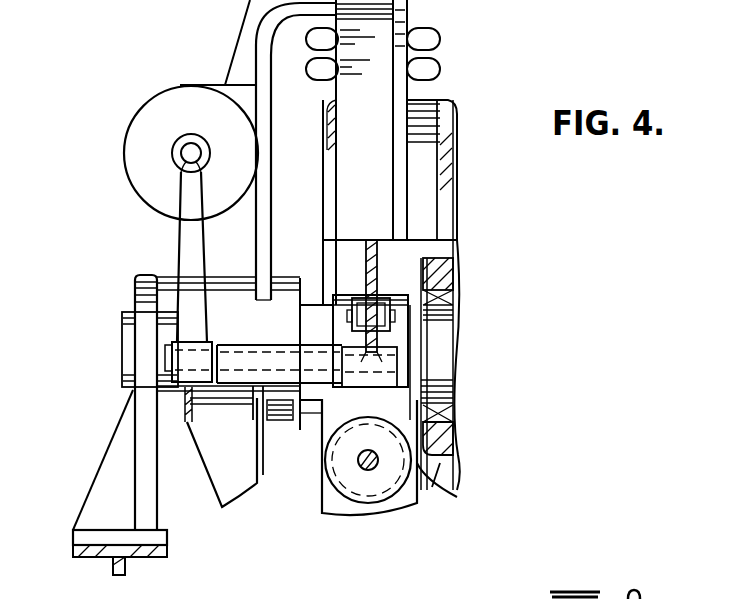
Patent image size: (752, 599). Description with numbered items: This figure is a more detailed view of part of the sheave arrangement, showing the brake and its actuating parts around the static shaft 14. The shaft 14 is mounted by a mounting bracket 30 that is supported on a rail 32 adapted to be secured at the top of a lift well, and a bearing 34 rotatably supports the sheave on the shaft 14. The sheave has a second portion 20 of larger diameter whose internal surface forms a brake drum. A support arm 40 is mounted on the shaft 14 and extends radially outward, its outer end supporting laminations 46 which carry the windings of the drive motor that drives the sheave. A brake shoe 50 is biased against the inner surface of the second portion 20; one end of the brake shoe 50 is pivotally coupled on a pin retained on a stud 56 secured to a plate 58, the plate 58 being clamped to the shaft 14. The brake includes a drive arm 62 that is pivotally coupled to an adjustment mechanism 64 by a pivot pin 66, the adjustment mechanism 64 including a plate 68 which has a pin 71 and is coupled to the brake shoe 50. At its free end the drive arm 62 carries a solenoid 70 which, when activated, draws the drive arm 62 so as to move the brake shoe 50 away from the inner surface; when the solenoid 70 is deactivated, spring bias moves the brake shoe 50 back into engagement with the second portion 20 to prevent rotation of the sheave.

The static shaft 14 is at (437, 365).
The second portion 20 is at (418, 225).
The mounting bracket 30 is at (140, 460).
The rail 32 is at (97, 556).
The bearing 34 is at (440, 440).
The support arm 40 is at (256, 42).
The lamination 46 is at (367, 82).
The brake shoe 50 is at (362, 257).
The stud 56 is at (360, 463).
The plate 58 is at (383, 478).
The drive arm 62 is at (186, 234).
The adjustment mechanism 64 is at (398, 332).
The pivot pin 66 is at (318, 405).
The plate 68 is at (453, 273).
The solenoid 70 is at (142, 144).
The pin 71 is at (457, 322).